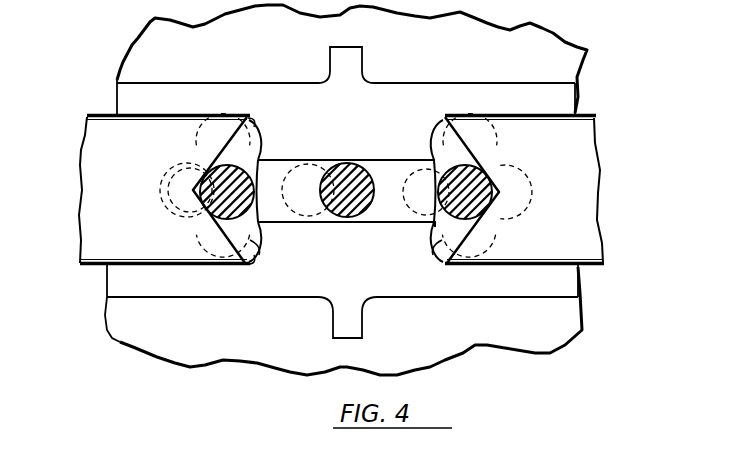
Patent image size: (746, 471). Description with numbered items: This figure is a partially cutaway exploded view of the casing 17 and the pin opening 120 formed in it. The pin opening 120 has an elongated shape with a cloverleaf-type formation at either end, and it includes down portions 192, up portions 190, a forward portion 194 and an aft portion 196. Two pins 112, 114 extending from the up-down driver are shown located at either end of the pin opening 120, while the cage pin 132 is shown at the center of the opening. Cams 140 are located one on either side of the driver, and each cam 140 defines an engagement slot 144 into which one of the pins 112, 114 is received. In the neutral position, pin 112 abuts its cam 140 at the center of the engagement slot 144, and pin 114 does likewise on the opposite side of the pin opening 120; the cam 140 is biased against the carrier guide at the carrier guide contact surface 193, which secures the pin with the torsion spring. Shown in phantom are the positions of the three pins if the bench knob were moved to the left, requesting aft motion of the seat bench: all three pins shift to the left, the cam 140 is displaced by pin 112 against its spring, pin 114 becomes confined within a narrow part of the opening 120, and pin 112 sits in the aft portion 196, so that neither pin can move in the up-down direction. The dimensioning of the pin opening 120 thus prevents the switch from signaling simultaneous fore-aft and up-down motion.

The casing 17 is at (120, 342).
The cam 140 is at (88, 185).
The pin opening 120 is at (384, 162).
The up portions 190 is at (254, 134).
The carrier guide contact surface 193 is at (252, 119).
The pin 112 is at (258, 172).
The cage pin 132 is at (346, 218).
The pin 114 is at (436, 228).
The aft portion 196 is at (168, 162).
The forward portion 194 is at (517, 152).
The engagement slot 144 is at (228, 225).
The down portions 192 is at (256, 243).